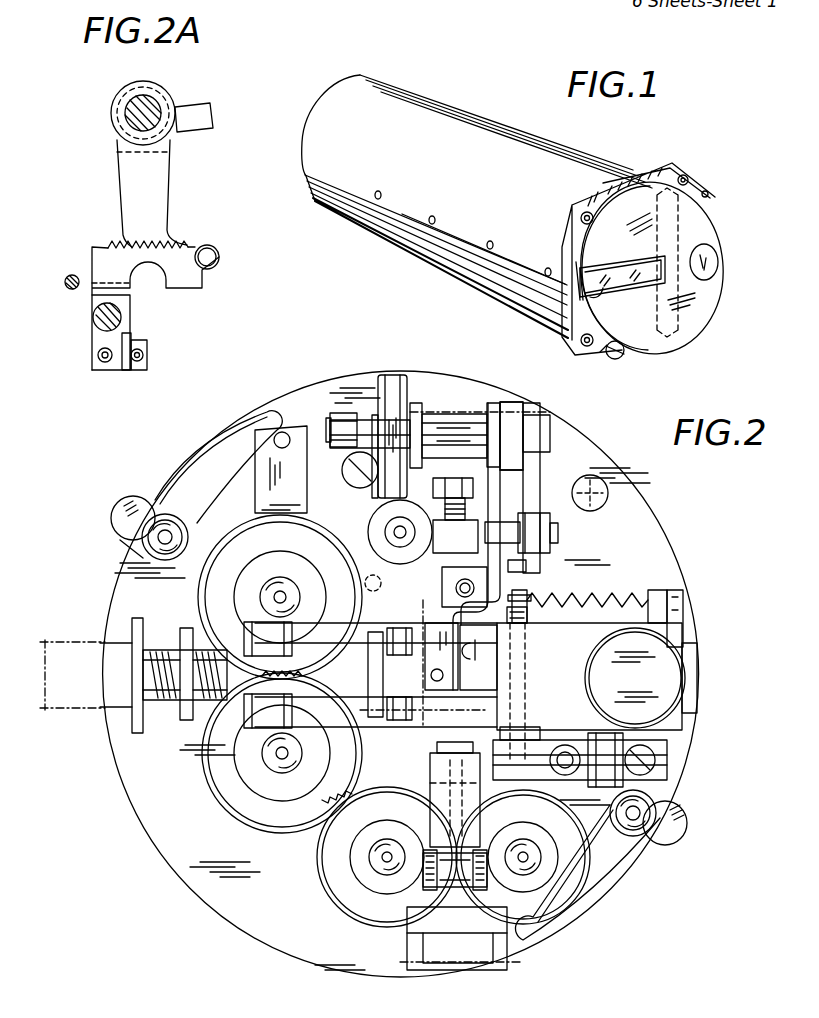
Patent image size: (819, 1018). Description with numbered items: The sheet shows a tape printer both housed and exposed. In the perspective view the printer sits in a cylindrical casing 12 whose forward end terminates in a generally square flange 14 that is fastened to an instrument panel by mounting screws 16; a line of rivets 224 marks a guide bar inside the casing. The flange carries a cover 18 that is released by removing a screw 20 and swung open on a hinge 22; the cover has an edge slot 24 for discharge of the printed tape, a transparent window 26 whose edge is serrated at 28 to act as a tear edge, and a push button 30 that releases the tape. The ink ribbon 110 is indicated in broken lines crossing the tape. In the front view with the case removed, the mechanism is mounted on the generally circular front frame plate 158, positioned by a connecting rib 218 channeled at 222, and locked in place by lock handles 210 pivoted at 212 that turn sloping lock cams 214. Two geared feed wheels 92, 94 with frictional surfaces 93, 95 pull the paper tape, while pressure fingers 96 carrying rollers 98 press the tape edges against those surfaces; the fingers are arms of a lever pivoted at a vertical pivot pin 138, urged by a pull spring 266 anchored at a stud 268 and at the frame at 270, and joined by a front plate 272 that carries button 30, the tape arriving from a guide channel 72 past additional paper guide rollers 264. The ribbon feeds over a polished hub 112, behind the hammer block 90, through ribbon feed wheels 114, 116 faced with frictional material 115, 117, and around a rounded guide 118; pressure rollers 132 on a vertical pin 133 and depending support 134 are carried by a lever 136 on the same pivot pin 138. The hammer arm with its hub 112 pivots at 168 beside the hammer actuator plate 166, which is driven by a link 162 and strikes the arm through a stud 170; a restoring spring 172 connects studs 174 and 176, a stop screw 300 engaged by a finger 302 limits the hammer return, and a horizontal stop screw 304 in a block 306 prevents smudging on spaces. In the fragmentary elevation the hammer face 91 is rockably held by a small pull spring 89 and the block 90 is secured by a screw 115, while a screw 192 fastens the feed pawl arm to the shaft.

In FIG. 1, the cylindrical casing 12 is at (467, 113).
In FIG. 1, the square flange 14 is at (645, 175).
In FIG. 1, the mounting screws 16 is at (586, 212).
In FIG. 1, the cover 18 is at (710, 292).
In FIG. 1, the screw 20 is at (613, 360).
In FIG. 1, the hinge 22 is at (690, 178).
In FIG. 1, the edge slot 24 is at (583, 278).
In FIG. 1, the transparent window 26 is at (630, 265).
In FIG. 1, the serrated edge 28 is at (600, 296).
In FIG. 1, the push button 30 is at (716, 258).
In FIG. 2, the push button 30 is at (672, 670).
In FIG. 2, the guide channel 72 is at (697, 690).
In FIG. 2A, the pull spring 89 is at (96, 357).
In FIG. 2A, the block 90 is at (127, 338).
In FIG. 2, the block 90 is at (432, 658).
In FIG. 2A, the hammer face 91 is at (150, 355).
In FIG. 2, the feed wheel 92 is at (200, 576).
In FIG. 2, the frictional surface 93 is at (225, 598).
In FIG. 2, the feed wheel 94 is at (212, 800).
In FIG. 2, the frictional surface 95 is at (220, 758).
In FIG. 2, the pressure fingers 96 is at (306, 640).
In FIG. 2, the rollers 98 is at (250, 640).
In FIG. 1, the ink ribbon 110 is at (681, 224).
In FIG. 2, the ink ribbon 110 is at (424, 968).
In FIG. 2A, the hub 112 is at (128, 111).
In FIG. 2, the hub 112 is at (447, 420).
In FIG. 2A, the ribbon feed wheel 114 is at (127, 173).
In FIG. 2, the ribbon feed wheel 114 is at (345, 904).
In FIG. 2A, the frictional material 115 is at (95, 316).
In FIG. 2, the frictional material 115 is at (342, 860).
In FIG. 2, the ribbon feed wheel 116 is at (520, 937).
In FIG. 2, the frictional material 117 is at (565, 870).
In FIG. 2, the rounded guide 118 is at (463, 950).
In FIG. 2, the pressure rollers 132 is at (422, 888).
In FIG. 2, the vertical pin 133 is at (428, 784).
In FIG. 2, the depending support 134 is at (440, 775).
In FIG. 2, the lever 136 is at (447, 743).
In FIG. 2, the pivot pin 138 is at (522, 668).
In FIG. 2, the front frame plate 158 is at (625, 485).
In FIG. 2, the link 162 is at (545, 512).
In FIG. 2, the hammer actuator plate 166 is at (491, 410).
In FIG. 2A, the pivot shaft 168 is at (130, 105).
In FIG. 2, the pivot shaft 168 is at (535, 420).
In FIG. 2A, the stud 170 is at (72, 275).
In FIG. 2, the stud 170 is at (505, 527).
In FIG. 2A, the restoring spring 172 is at (170, 257).
In FIG. 2A, the stud 174 is at (216, 259).
In FIG. 2, the stud 174 is at (530, 585).
In FIG. 2, the stud 176 is at (528, 562).
In FIG. 2, the screw 192 is at (363, 400).
In FIG. 2, the lock handles 210 is at (228, 432).
In FIG. 2, the pivot 212 is at (142, 546).
In FIG. 2, the lock cams 214 is at (112, 515).
In FIG. 2, the rib 218 is at (80, 645).
In FIG. 2, the channel 222 is at (115, 690).
In FIG. 1, the rivets 224 is at (382, 194).
In FIG. 2, the paper guide rollers 264 is at (392, 642).
In FIG. 2, the pull spring 266 is at (625, 596).
In FIG. 2, the stud 268 is at (527, 614).
In FIG. 2, the frame anchor 270 is at (660, 597).
In FIG. 2, the front plate 272 is at (578, 721).
In FIG. 2, the adjustable stop screw 300 is at (440, 418).
In FIG. 2A, the finger 302 is at (190, 125).
In FIG. 2, the horizontal stop screw 304 is at (464, 580).
In FIG. 2, the block 306 is at (442, 598).